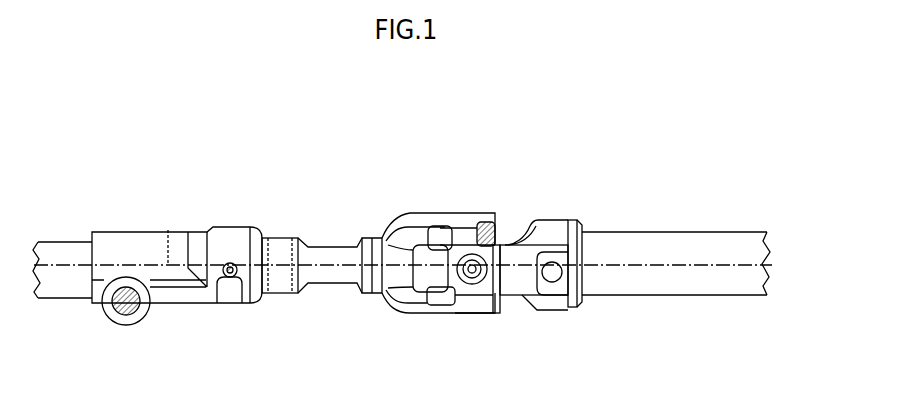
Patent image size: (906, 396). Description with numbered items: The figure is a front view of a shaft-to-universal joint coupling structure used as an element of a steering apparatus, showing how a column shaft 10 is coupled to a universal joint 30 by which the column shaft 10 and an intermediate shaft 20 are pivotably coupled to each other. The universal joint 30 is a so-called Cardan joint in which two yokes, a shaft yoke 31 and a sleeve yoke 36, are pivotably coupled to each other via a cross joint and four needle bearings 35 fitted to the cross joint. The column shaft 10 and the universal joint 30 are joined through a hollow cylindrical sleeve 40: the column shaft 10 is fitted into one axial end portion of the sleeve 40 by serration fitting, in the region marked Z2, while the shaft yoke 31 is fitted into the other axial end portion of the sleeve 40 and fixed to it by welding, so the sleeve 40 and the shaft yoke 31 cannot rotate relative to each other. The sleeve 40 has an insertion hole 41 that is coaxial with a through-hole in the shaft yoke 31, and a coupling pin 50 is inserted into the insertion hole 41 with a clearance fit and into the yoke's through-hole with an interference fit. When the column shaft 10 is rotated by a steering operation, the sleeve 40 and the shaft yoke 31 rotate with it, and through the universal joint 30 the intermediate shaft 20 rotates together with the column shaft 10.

The column shaft 10 is at (66, 240).
The intermediate shaft 20 is at (673, 232).
The universal joint 30 is at (472, 222).
The shaft yoke 31 is at (336, 243).
The needle bearings 35 is at (477, 211).
The sleeve yoke 36 is at (552, 218).
The sleeve 40 is at (234, 224).
The insertion hole 41 is at (239, 299).
The coupling pin 50 is at (218, 302).
The serration region Z2 is at (171, 227).